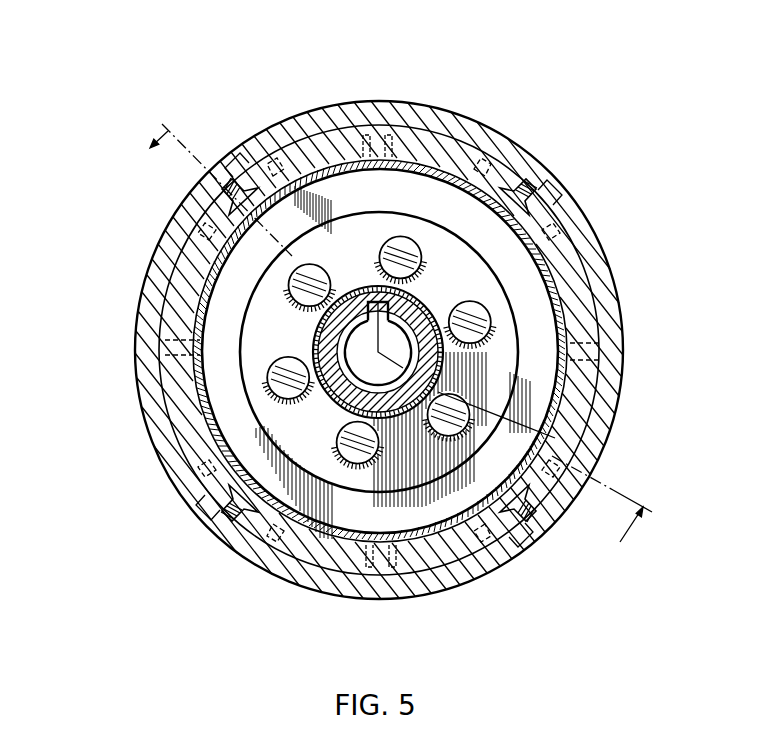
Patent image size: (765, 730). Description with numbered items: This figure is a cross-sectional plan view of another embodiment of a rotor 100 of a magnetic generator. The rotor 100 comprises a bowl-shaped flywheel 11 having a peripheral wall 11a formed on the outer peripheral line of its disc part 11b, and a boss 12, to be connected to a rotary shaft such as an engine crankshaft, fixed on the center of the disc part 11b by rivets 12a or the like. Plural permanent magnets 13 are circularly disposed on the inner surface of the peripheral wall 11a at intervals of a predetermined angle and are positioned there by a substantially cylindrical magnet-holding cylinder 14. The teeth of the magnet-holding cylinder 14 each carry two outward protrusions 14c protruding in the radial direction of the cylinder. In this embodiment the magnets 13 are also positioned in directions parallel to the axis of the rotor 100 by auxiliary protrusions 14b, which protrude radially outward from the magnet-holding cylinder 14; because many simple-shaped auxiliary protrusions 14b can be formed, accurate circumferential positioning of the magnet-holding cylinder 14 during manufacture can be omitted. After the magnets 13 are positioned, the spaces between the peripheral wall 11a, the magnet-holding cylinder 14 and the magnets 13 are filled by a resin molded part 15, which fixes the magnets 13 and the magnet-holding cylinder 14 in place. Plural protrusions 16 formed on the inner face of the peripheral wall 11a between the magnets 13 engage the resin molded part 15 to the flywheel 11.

The rotor 100 is at (495, 104).
The flywheel 11 is at (420, 100).
The peripheral wall 11a is at (622, 306).
The disc part 11b is at (601, 352).
The boss 12 is at (410, 310).
The rivets 12a is at (287, 358).
The permanent magnets 13 is at (272, 180).
The magnet-holding cylinder 14 is at (207, 400).
The auxiliary protrusions 14b is at (295, 145).
The outward protrusions 14c is at (372, 150).
The resin molded part 15 is at (238, 178).
The protrusions 16 is at (548, 190).